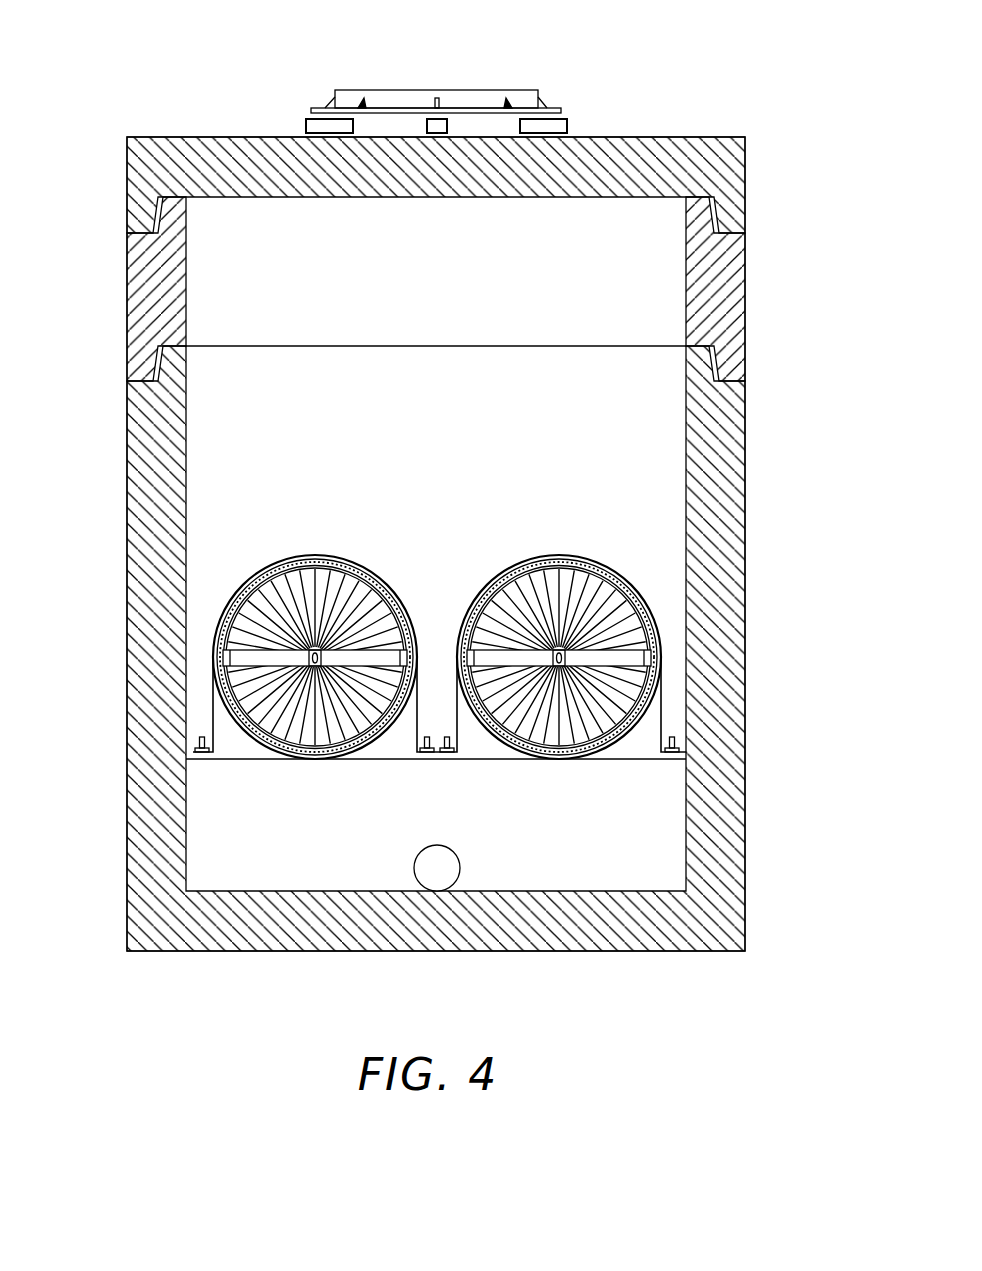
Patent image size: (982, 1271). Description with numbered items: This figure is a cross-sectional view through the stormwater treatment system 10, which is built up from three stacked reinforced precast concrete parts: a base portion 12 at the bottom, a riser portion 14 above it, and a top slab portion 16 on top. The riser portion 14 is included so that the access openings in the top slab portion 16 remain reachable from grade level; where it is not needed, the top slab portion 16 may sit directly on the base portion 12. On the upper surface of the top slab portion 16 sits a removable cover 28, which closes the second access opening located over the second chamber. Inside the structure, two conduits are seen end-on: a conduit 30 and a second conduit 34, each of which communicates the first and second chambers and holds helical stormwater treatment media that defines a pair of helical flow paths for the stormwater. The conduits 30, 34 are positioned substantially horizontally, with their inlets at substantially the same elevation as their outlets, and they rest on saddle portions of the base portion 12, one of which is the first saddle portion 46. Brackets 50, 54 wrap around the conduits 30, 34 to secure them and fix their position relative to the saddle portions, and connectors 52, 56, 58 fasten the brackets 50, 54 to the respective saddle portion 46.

The stormwater treatment system 10 is at (770, 159).
The base portion 12 is at (142, 605).
The riser portion 14 is at (736, 300).
The top slab portion 16 is at (647, 153).
The removable cover 28 is at (462, 100).
The conduit 30 is at (653, 618).
The second conduit 34 is at (223, 648).
The first saddle portion 46 is at (310, 762).
The bracket 50 is at (210, 703).
The connector 52 is at (197, 755).
The bracket 54 is at (458, 737).
The connector 56 is at (426, 755).
The connector 58 is at (677, 745).